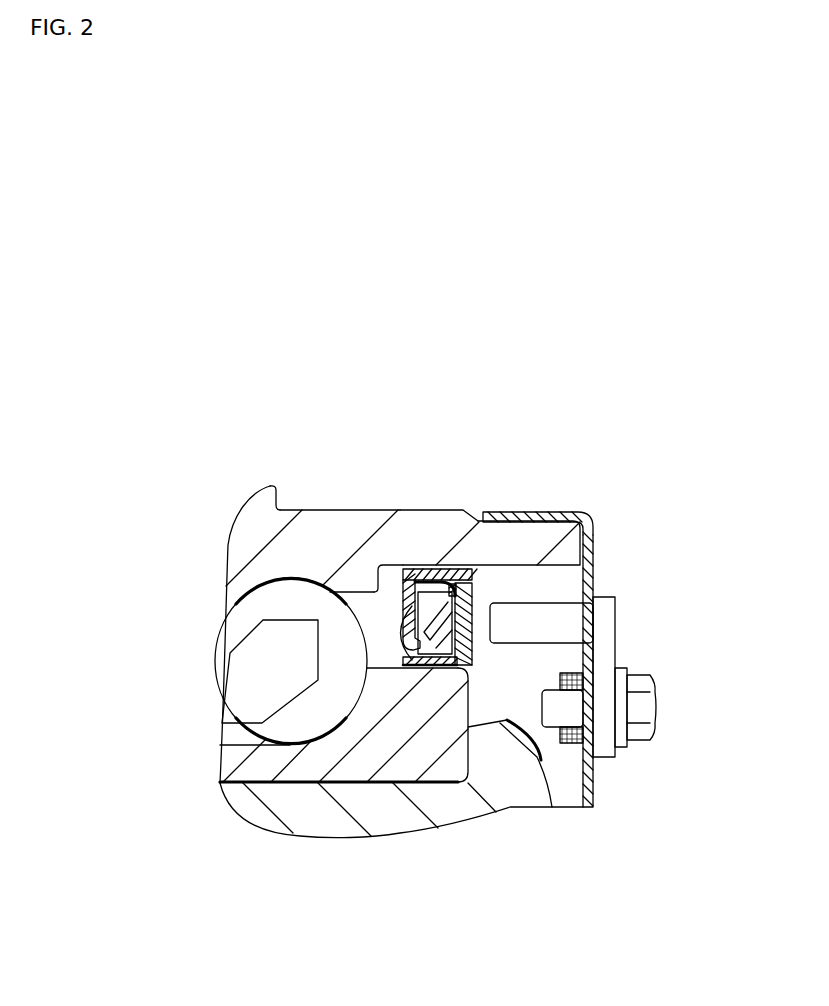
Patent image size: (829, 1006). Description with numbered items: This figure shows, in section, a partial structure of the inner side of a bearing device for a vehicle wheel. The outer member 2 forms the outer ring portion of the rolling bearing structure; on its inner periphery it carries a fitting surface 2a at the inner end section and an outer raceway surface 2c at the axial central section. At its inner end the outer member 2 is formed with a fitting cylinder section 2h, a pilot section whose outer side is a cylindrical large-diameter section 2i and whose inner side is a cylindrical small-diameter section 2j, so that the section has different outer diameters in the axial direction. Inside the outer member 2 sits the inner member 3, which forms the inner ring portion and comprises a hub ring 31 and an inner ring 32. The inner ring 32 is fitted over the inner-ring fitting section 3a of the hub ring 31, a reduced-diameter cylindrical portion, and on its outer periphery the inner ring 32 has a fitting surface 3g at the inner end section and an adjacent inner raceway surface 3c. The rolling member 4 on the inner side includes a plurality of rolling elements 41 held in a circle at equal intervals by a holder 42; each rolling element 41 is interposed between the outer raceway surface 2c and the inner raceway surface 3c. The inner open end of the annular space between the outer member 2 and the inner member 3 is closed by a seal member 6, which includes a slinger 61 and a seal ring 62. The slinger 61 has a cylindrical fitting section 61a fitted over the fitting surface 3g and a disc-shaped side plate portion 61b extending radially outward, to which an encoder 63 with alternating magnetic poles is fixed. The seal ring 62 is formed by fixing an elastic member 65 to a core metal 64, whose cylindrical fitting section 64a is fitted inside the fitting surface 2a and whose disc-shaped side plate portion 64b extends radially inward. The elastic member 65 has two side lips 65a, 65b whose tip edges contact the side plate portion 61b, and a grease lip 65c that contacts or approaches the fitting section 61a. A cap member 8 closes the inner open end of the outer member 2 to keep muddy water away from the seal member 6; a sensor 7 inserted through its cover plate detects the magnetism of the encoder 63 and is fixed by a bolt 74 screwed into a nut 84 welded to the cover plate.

The outer member 2 is at (342, 492).
The fitting surface 2a is at (391, 566).
The outer raceway surface 2c is at (263, 594).
The fitting cylinder section 2h is at (433, 444).
The large-diameter section 2i is at (438, 510).
The small-diameter section 2j is at (511, 526).
The inner member 3 is at (390, 887).
The inner-ring fitting section 3a is at (350, 785).
The inner raceway surface 3c is at (307, 740).
The fitting surface 3g is at (377, 670).
The hub ring 31 is at (400, 832).
The inner ring 32 is at (443, 775).
The rolling member 4 is at (263, 887).
The rolling element 41 is at (265, 741).
The holder 42 is at (220, 708).
The seal member 6 is at (763, 525).
The slinger 61 is at (719, 663).
The fitting section 61a is at (545, 708).
The side plate portion 61b is at (598, 668).
The seal ring 62 is at (719, 488).
The encoder 63 is at (616, 617).
The core metal 64 is at (676, 472).
The fitting section 64a is at (433, 568).
The side plate portion 64b is at (428, 580).
The elastic member 65 is at (676, 528).
The side lip 65a is at (473, 620).
The side lip 65b is at (473, 633).
The grease lip 65c is at (478, 590).
The sensor 7 is at (557, 652).
The bolt 74 is at (640, 741).
The cap member 8 is at (602, 801).
The nut 84 is at (572, 745).